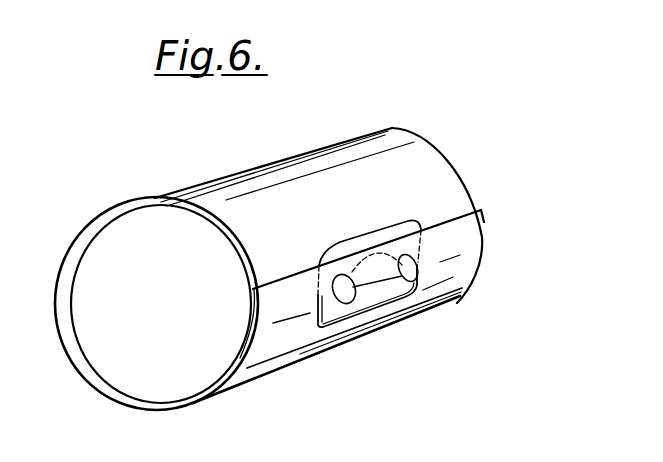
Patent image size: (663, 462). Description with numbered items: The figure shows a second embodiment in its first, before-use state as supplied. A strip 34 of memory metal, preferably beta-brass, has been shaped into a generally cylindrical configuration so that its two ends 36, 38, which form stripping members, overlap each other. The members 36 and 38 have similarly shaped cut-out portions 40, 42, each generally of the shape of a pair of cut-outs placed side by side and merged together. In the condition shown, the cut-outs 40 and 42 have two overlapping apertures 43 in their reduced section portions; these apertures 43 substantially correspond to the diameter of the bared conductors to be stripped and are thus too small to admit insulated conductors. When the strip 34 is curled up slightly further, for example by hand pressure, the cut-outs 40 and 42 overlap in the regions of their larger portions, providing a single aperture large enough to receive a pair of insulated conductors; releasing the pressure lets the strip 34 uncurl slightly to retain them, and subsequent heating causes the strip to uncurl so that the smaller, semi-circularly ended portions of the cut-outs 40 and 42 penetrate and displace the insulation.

The strip 34 is at (191, 186).
The end 36 is at (243, 316).
The end 38 is at (484, 220).
The cut-out portion 40 is at (373, 228).
The cut-out portion 42 is at (380, 298).
The apertures 43 is at (412, 271).